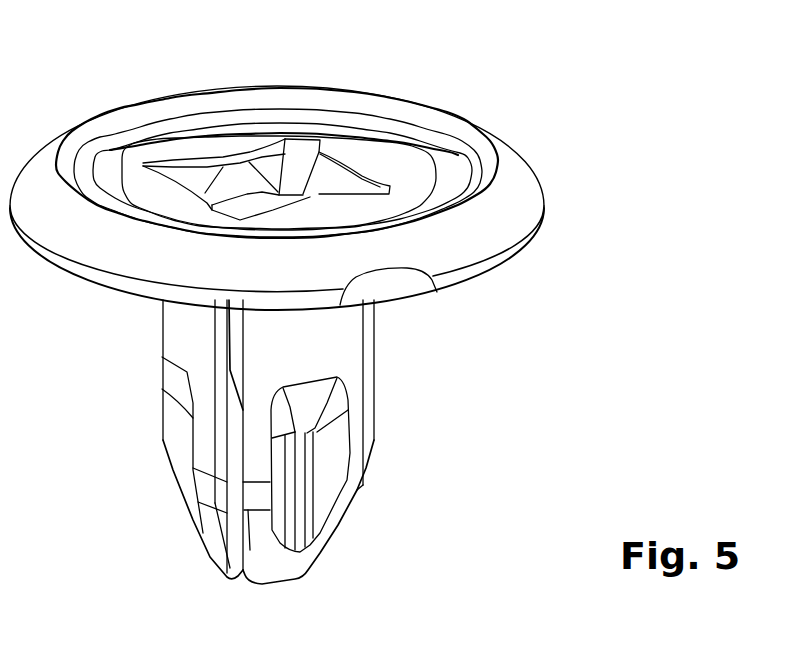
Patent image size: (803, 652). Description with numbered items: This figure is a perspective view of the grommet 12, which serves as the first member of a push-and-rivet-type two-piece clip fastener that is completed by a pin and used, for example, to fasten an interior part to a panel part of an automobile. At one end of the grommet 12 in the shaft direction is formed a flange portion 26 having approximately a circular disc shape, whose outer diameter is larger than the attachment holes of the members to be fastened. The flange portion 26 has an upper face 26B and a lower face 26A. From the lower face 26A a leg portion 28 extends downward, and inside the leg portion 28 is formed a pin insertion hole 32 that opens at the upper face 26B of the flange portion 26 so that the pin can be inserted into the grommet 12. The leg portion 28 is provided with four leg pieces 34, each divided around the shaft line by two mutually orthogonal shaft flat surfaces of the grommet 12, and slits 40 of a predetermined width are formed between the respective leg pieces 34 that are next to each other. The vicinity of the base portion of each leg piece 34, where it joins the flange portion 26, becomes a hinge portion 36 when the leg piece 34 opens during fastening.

The grommet 12 is at (400, 75).
The flange portion 26 is at (531, 170).
The lower face 26A is at (465, 272).
The upper face 26B is at (410, 163).
The pin insertion hole 32 is at (302, 163).
The leg portion 28 is at (388, 386).
The leg pieces 34 is at (144, 459).
The hinge portion 36 is at (160, 352).
The slits 40 is at (363, 428).